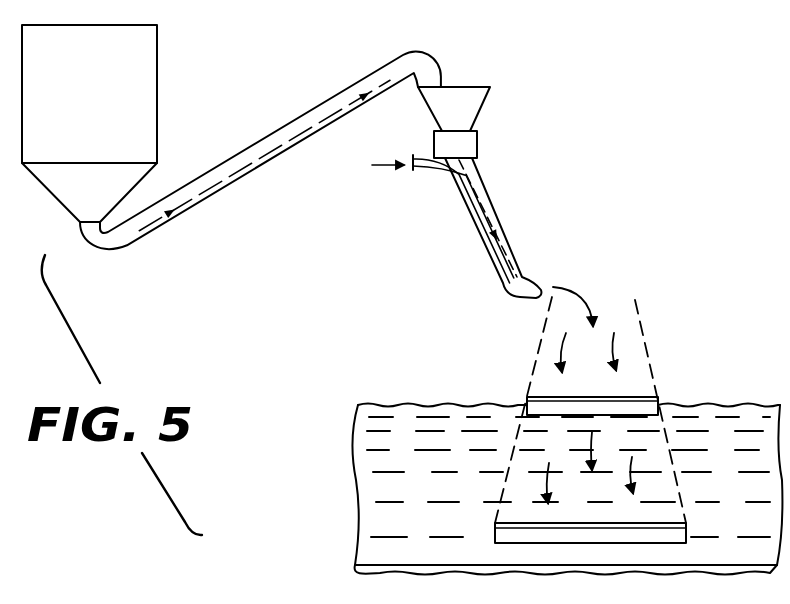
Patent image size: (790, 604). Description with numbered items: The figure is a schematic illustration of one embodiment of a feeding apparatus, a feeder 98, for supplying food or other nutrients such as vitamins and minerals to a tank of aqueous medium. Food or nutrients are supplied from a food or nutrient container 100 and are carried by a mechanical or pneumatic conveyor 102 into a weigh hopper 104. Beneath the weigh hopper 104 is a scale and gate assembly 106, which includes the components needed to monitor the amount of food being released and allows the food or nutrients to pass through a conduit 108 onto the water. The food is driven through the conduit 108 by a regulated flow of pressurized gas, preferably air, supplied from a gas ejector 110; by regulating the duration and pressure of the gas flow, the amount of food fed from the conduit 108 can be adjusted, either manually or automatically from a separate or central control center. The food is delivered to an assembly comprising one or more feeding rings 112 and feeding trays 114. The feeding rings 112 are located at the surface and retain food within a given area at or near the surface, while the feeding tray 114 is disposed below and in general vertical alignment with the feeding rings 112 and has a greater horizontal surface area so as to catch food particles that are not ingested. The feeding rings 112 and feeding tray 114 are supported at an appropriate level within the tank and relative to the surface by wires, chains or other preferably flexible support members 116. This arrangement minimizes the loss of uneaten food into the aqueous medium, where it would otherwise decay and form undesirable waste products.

The feeder 98 is at (320, 273).
The food or nutrient container 100 is at (158, 72).
The mechanical or pneumatic conveyor 102 is at (317, 110).
The weigh hopper 104 is at (478, 104).
The scale and gate assembly 106 is at (468, 146).
The conduit 108 is at (495, 213).
The gas ejector 110 is at (462, 213).
The feeding rings 112 is at (648, 397).
The feeding trays 114 is at (495, 529).
The support members 116 is at (646, 342).